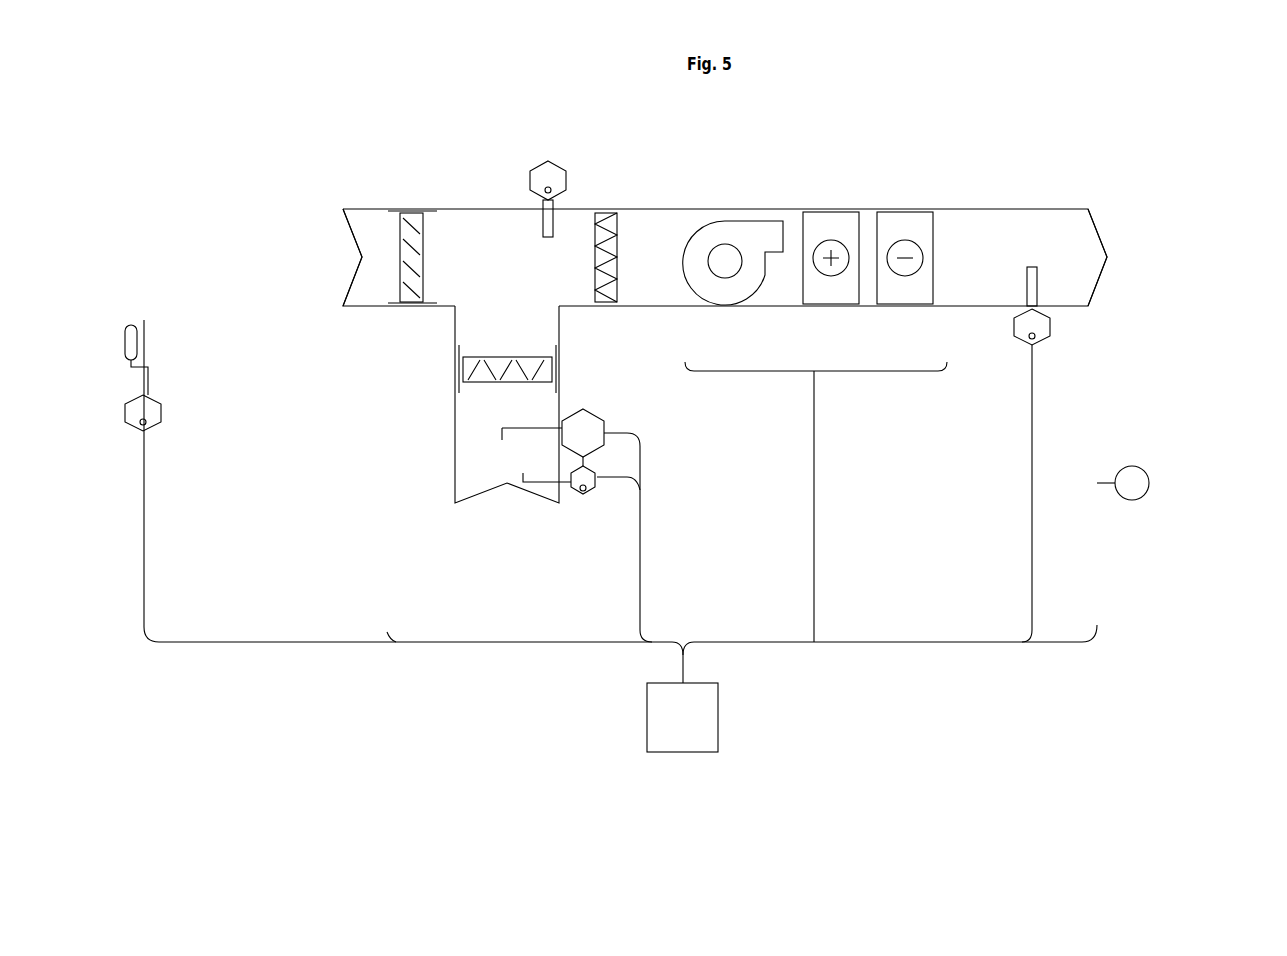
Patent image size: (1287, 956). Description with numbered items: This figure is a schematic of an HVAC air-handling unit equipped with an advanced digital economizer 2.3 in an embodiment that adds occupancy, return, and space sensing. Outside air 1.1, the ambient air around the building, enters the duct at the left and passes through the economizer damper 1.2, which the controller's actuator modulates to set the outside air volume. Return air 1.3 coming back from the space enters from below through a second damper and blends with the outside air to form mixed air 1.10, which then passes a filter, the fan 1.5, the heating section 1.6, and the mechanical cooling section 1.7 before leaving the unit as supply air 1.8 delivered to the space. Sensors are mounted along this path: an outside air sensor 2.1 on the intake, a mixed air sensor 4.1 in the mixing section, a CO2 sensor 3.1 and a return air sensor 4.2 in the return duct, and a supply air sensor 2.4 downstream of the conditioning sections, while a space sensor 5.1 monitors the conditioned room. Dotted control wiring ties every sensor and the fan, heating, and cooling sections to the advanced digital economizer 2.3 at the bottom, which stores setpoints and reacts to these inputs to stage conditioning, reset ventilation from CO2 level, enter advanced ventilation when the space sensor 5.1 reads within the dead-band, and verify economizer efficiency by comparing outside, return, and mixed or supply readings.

The outside air 1.1 is at (265, 262).
The economizer damper 1.2 is at (392, 384).
The return air 1.3 is at (512, 558).
The fan 1.5 is at (775, 413).
The heating 1.6 is at (875, 413).
The mechanical cooling 1.7 is at (962, 413).
The supply air 1.8 is at (1040, 230).
The mixed air 1.10 is at (490, 222).
The outside air sensor 2.1 is at (168, 460).
The advanced digital economizer 2.3 is at (723, 837).
The supply air sensor 2.4 is at (1113, 378).
The CO2 sensor 3.1 is at (565, 487).
The mixed air sensor 4.1 is at (530, 175).
The return air sensor 4.2 is at (595, 537).
The space sensor 5.1 is at (1162, 518).